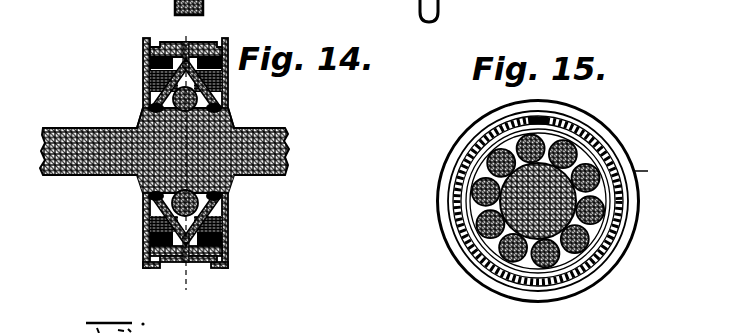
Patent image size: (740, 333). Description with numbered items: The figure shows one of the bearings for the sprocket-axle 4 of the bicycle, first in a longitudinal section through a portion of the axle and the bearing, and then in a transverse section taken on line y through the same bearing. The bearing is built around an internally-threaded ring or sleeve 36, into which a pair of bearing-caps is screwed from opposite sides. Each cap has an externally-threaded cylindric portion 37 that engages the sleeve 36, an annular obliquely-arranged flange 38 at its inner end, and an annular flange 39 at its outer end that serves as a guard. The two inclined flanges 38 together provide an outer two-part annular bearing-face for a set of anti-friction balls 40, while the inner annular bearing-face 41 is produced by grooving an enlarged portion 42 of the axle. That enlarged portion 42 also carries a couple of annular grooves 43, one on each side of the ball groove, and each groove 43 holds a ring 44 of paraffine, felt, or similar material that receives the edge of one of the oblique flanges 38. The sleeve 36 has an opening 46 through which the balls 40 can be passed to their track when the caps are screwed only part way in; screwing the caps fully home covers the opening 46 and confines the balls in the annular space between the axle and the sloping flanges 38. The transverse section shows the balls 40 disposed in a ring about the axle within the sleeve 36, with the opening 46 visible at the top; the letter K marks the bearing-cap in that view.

In FIG. 14, the sprocket-axle 4 is at (289, 150).
In FIG. 14, the internally-threaded ring or sleeve 36 is at (208, 263).
In FIG. 15, the internally-threaded ring or sleeve 36 is at (574, 292).
In FIG. 14, the externally-threaded cylindric portion 37 is at (150, 210).
In FIG. 14, the annular obliquely-arranged flange 38 is at (150, 93).
In FIG. 14, the annular flange 39 is at (145, 42).
In FIG. 14, the anti-friction balls 40 is at (230, 93).
In FIG. 15, the anti-friction balls 40 is at (480, 228).
In FIG. 14, the inner annular bearing-face 41 is at (146, 183).
In FIG. 14, the enlarged portion of the axle 42 is at (232, 113).
In FIG. 14, the annular grooves 43 is at (143, 115).
In FIG. 14, the ring 44 is at (230, 107).
In FIG. 15, the opening 46 is at (542, 116).
In FIG. 15, the section line K is at (647, 171).
In FIG. 14, the section line yy y is at (184, 162).